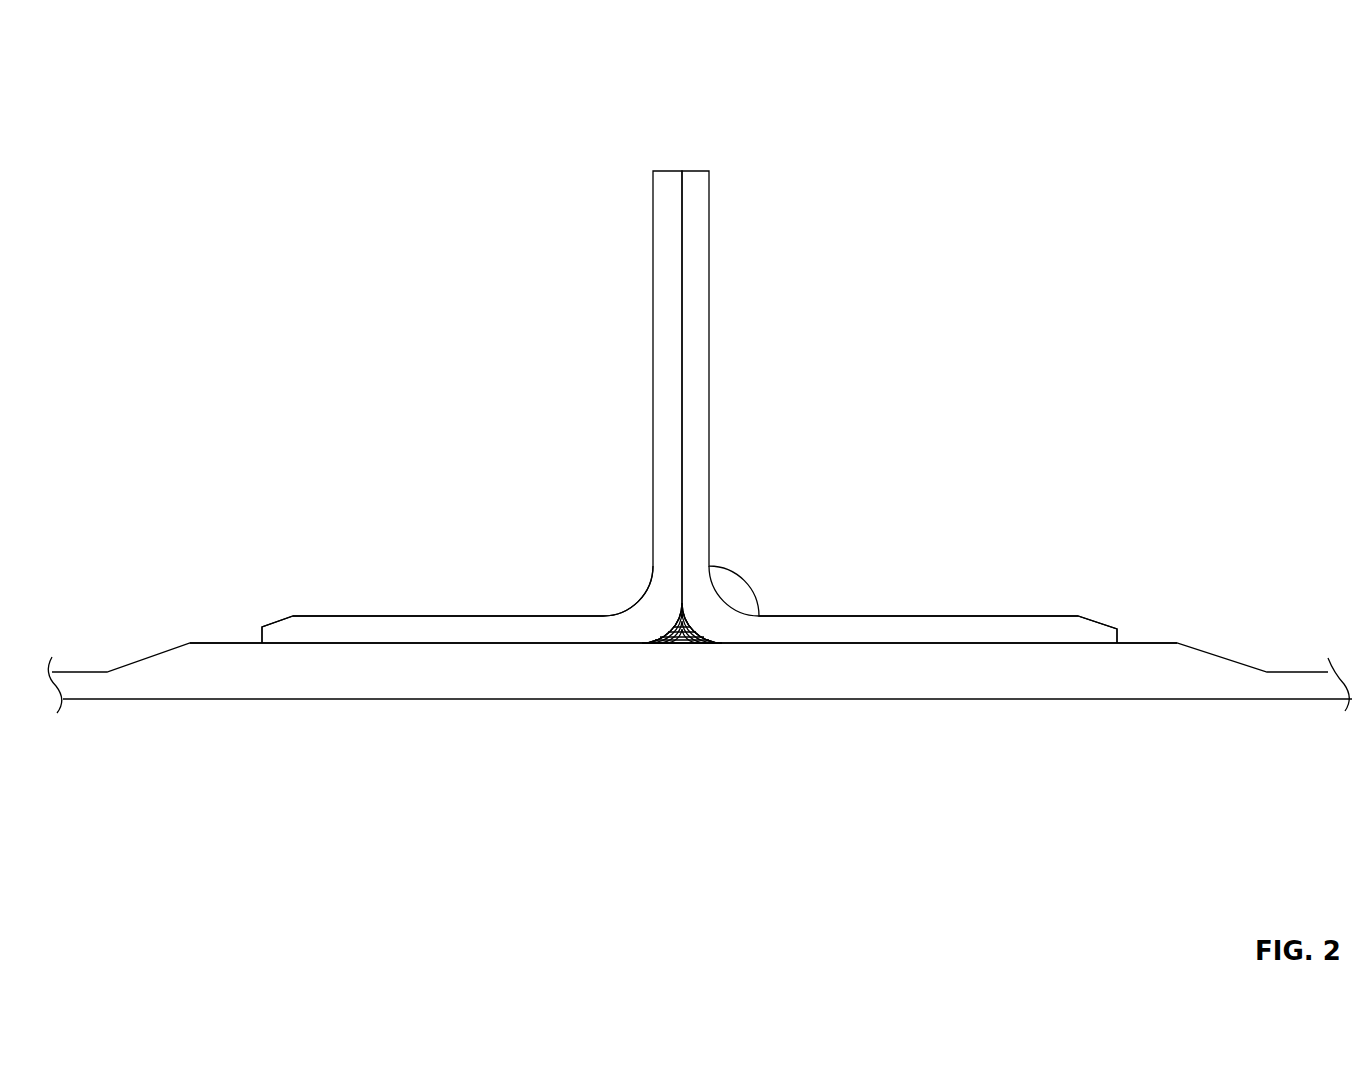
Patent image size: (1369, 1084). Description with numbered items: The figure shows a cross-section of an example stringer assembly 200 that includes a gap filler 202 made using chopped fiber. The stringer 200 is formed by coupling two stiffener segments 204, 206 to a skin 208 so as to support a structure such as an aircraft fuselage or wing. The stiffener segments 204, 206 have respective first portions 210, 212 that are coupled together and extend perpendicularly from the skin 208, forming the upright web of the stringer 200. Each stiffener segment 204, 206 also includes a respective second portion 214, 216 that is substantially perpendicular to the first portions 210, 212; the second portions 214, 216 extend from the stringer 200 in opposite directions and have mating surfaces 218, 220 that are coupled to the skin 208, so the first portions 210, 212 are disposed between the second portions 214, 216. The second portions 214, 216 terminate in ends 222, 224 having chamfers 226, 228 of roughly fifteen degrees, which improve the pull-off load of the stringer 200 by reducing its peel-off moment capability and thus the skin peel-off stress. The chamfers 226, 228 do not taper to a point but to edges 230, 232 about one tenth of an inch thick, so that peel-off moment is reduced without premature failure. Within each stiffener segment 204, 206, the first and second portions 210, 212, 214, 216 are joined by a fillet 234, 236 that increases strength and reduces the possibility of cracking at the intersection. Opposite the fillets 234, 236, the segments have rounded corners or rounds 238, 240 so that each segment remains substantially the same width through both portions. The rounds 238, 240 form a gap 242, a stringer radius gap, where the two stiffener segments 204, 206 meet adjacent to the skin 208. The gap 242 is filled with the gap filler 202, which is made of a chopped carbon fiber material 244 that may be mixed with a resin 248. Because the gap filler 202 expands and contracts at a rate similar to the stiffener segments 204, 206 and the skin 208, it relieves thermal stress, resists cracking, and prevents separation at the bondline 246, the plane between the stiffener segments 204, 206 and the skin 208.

The stringer assembly 200 is at (1054, 80).
The gap filler 202 is at (676, 650).
The stiffener segment 204 is at (432, 283).
The stiffener segment 206 is at (940, 283).
The skin 208 is at (1150, 690).
The first portion 210 is at (667, 353).
The first portion 212 is at (700, 287).
The second portion 214 is at (508, 626).
The second portion 216 is at (903, 625).
The mating surface 218 is at (385, 641).
The mating surface 220 is at (1016, 641).
The end 222 is at (253, 598).
The end 224 is at (1130, 598).
The chamfer 226 is at (278, 622).
The chamfer 228 is at (1104, 626).
The edge 230 is at (255, 636).
The edge 232 is at (1120, 636).
The fillet 234 is at (565, 578).
The fillet 236 is at (766, 578).
The round 238 is at (655, 631).
The round 240 is at (712, 628).
The gap 242 is at (707, 649).
The chopped carbon fiber material 244 is at (656, 630).
The bondline 246 is at (883, 649).
The resin 248 is at (660, 644).